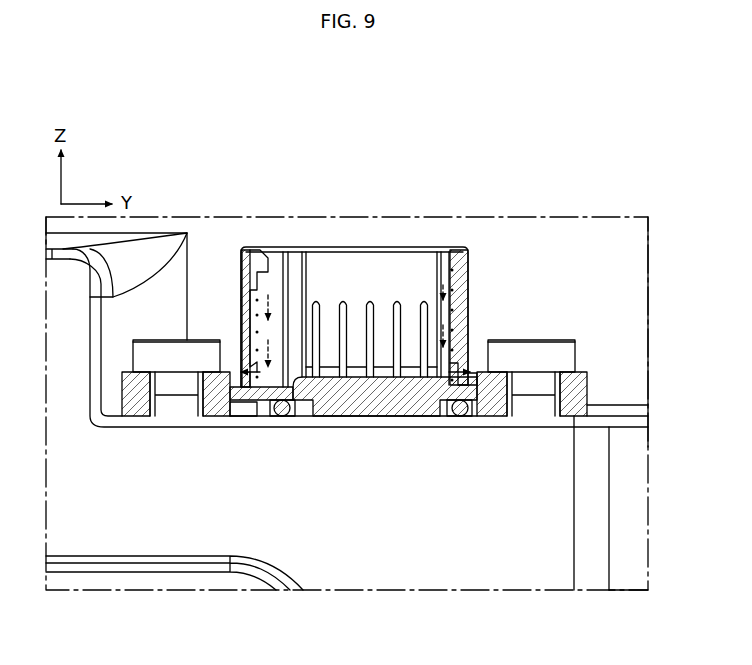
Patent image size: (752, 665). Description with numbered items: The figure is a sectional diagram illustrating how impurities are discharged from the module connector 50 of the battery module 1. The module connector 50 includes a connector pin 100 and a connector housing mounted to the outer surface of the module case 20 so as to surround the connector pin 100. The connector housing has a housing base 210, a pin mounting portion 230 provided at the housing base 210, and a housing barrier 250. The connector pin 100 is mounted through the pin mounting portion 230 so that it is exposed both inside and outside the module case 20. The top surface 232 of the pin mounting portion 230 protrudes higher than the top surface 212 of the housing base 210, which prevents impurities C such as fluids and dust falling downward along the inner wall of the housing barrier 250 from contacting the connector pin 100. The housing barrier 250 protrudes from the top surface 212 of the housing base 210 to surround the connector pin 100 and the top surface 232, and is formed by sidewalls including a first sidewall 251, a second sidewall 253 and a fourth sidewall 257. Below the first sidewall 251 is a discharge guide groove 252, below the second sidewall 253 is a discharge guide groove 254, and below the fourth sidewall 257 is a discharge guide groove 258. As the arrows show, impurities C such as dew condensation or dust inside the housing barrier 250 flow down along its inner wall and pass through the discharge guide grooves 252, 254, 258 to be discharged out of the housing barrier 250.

The battery module 1 is at (205, 153).
The module case 20 is at (595, 421).
The module connector 50 is at (250, 240).
The connector pin 100 is at (340, 292).
The housing base 210 is at (243, 400).
The top surface of housing base 212 is at (241, 400).
The pin mounting portion 230 is at (337, 380).
The top surface of pin mounting portion 232 is at (303, 400).
The housing barrier 250 is at (480, 246).
The first sidewall 251 is at (462, 297).
The discharge guide groove 252 is at (458, 365).
The second sidewall 253 is at (247, 297).
The discharge guide groove 254 is at (246, 358).
The fourth sidewall 257 is at (410, 262).
The discharge guide groove 258 is at (357, 363).
The impurities C is at (447, 268).